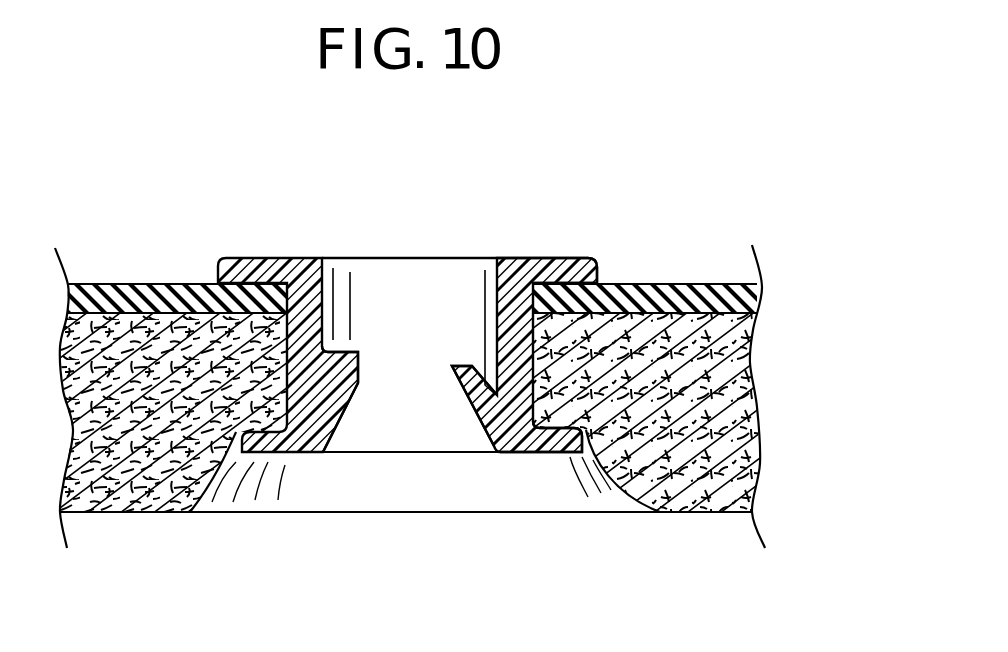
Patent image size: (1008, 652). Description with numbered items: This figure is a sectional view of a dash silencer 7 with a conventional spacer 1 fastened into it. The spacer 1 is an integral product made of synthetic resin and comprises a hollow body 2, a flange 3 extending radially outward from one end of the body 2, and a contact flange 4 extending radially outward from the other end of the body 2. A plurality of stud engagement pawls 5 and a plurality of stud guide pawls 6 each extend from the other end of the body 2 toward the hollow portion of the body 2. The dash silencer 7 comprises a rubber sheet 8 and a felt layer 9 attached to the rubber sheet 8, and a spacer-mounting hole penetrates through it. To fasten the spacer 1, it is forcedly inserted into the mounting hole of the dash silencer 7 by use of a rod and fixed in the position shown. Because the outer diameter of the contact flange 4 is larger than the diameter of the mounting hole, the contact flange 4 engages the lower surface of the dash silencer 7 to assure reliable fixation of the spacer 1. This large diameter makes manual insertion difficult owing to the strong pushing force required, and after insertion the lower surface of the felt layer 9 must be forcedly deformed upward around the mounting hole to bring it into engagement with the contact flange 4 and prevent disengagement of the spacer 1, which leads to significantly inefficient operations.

The spacer 1 is at (438, 245).
The hollow body 2 is at (288, 341).
The flange 3 is at (565, 277).
The contact flange 4 is at (559, 440).
The stud engagement pawls 5 is at (452, 375).
The stud guide pawls 6 is at (343, 368).
The dash silencer 7 is at (780, 343).
The rubber sheet 8 is at (667, 283).
The felt layer 9 is at (683, 413).